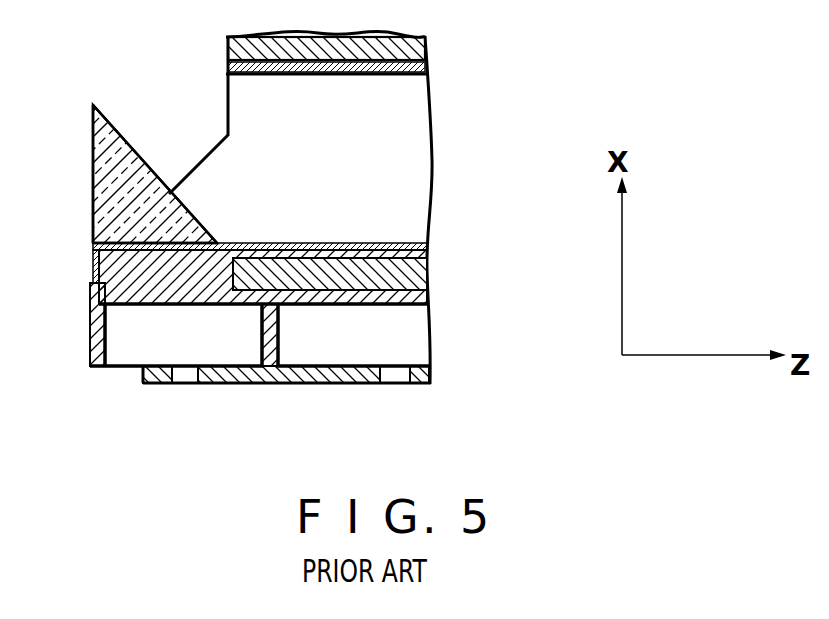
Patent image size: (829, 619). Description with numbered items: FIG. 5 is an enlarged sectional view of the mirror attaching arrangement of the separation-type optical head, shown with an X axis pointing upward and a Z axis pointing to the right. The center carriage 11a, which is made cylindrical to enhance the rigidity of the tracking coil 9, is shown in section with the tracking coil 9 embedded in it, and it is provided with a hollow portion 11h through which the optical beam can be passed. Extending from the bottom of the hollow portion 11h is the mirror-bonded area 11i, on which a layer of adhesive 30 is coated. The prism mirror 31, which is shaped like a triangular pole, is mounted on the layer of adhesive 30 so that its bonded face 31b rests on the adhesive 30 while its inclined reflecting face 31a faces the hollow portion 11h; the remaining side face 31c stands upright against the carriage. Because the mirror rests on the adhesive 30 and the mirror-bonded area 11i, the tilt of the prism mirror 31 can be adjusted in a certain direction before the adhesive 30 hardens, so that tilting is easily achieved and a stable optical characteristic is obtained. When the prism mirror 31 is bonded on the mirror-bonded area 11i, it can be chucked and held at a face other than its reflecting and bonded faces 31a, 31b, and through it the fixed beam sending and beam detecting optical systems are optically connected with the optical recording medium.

The tracking coil 9 is at (382, 280).
The center carriage 11a is at (183, 283).
The hollow portion 11h is at (414, 196).
The mirror-bonded area 11i is at (98, 274).
The adhesive 30 is at (92, 250).
The prism mirror 31 is at (92, 147).
The reflecting face 31a is at (134, 153).
The bonded face 31b is at (178, 240).
The prism side surface 31c is at (92, 199).